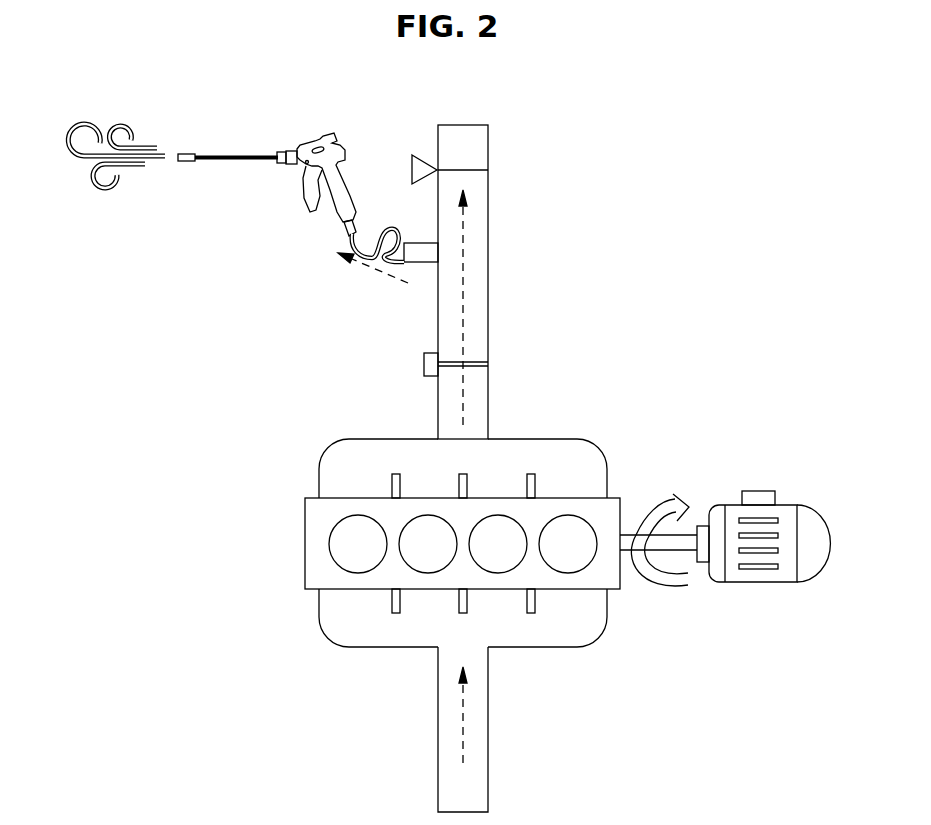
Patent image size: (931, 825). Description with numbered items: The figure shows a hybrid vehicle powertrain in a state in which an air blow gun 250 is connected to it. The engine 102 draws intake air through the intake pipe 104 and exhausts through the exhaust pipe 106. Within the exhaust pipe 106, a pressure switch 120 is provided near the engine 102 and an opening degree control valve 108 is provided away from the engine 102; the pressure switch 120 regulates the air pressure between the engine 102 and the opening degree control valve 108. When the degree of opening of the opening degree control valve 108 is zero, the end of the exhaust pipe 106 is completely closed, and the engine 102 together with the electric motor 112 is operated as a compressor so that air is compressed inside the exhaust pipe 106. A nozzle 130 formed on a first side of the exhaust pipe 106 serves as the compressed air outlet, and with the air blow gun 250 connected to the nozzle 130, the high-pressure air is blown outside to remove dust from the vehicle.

The engine 102 is at (623, 508).
The intake pipe 104 is at (488, 752).
The exhaust pipe 106 is at (488, 310).
The opening degree control valve 108 is at (412, 163).
The electric motor 112 is at (757, 491).
The pressure switch 120 is at (424, 360).
The nozzle 130 is at (428, 264).
The air blow gun 250 is at (333, 218).